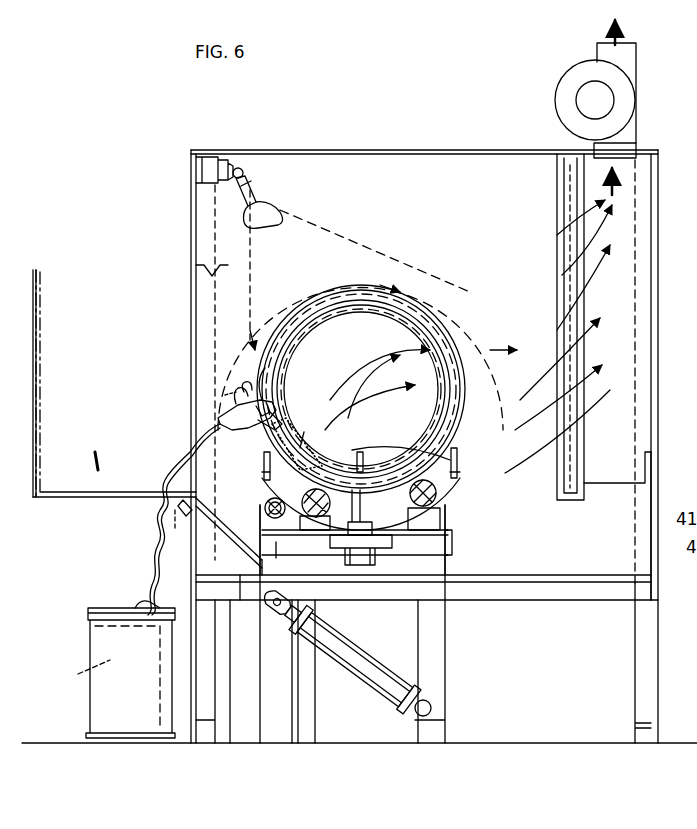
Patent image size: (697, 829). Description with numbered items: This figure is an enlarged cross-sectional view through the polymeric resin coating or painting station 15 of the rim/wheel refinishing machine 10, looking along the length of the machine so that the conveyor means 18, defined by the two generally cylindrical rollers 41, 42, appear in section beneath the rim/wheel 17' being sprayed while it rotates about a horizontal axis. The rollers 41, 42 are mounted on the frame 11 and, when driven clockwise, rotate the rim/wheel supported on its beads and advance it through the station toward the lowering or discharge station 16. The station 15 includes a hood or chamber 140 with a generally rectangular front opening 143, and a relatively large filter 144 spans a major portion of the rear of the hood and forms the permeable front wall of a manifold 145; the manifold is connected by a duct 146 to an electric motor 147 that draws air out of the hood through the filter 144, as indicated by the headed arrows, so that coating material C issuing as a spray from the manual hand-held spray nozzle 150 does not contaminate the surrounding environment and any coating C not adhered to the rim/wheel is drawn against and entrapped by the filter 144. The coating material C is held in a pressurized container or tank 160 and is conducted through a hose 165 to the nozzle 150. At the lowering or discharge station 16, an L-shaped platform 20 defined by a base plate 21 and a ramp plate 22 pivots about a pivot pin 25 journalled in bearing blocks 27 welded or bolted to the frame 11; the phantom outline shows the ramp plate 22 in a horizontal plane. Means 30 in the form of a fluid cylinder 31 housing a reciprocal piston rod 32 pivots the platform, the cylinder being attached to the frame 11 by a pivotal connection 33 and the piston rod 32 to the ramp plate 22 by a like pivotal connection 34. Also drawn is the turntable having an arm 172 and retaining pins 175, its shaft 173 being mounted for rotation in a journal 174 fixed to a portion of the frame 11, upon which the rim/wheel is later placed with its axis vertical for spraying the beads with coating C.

The machine 10 is at (393, 48).
The frame 11 is at (662, 700).
The polymeric resin coating or painting station 15 is at (446, 126).
The lowering or discharge station 16 is at (80, 502).
The rotary drum 17' is at (360, 389).
The conveyor means 18 is at (692, 490).
The L-shaped platform 20 is at (96, 450).
The base plate 21 is at (42, 402).
The ramp plate 22 is at (106, 490).
The pivot pin 25 is at (265, 508).
The bearing blocks 27 is at (275, 558).
The means for pivoting platform 30 is at (364, 653).
The fluid cylinder 31 is at (365, 665).
The piston rod 32 is at (241, 592).
The pivotal connection 33 is at (432, 705).
The pivotal connection 34 is at (180, 529).
The cylindrical roller 41 is at (408, 530).
The cylindrical roller 42 is at (355, 552).
The hood or chamber 140 is at (393, 177).
The front opening 143 is at (239, 216).
The filter 144 is at (568, 282).
The manifold 145 is at (623, 200).
The duct 146 is at (632, 66).
The electric motor 147 is at (565, 88).
The hand-held spray nozzle 150 is at (248, 394).
The pressurized container or tank 160 is at (148, 696).
The hose 165 is at (158, 525).
The arm 172 is at (440, 500).
The shaft 173 is at (362, 508).
The journal 174 is at (371, 554).
The retaining pin 175 is at (262, 468).
The coating material C is at (192, 548).